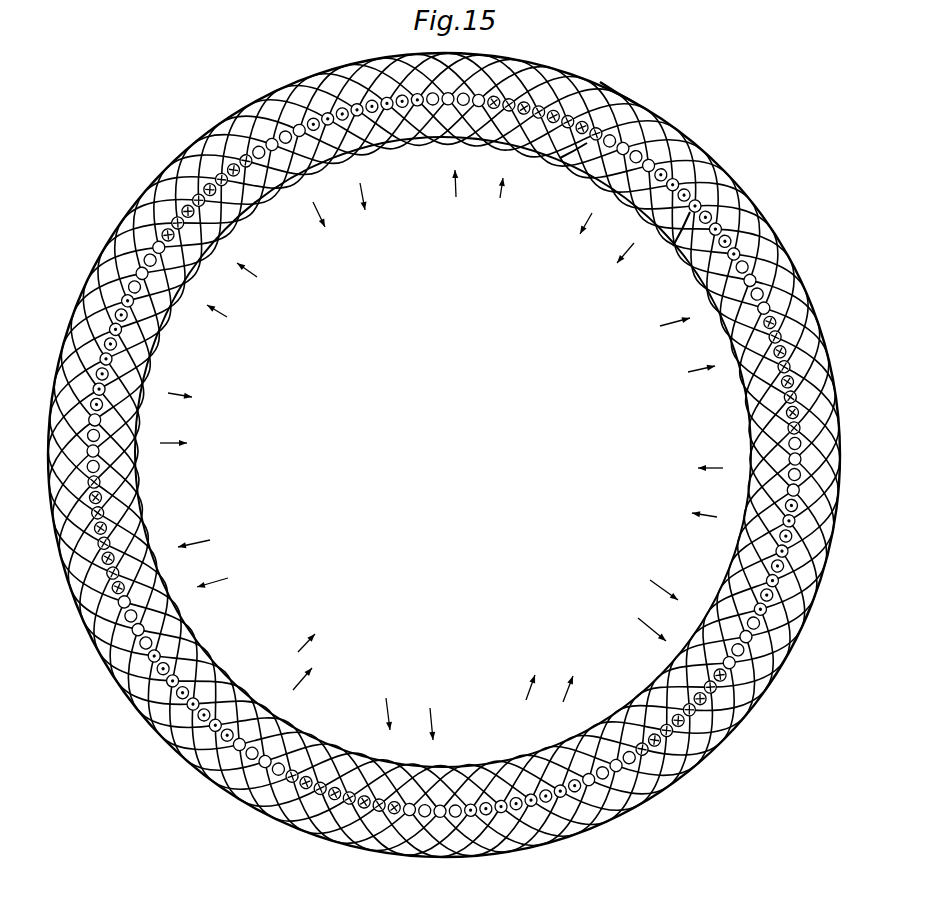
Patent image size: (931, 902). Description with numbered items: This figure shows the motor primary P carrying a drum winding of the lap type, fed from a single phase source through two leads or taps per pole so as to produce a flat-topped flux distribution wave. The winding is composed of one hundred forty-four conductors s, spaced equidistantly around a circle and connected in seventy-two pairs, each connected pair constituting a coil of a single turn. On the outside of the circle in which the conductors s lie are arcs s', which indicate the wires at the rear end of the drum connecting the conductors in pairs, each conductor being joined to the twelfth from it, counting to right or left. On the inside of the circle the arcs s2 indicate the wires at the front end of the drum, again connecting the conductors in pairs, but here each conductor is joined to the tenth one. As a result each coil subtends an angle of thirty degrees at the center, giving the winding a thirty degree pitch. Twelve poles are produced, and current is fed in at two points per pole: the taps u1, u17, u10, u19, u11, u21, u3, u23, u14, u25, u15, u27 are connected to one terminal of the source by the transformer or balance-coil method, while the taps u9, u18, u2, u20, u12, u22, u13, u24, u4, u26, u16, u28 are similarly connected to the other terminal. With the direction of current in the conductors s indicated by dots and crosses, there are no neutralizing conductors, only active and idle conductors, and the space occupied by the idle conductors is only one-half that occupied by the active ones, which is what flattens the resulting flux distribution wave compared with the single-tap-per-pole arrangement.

The tap u1 is at (448, 106).
The tap u2 is at (788, 462).
The tap u3 is at (441, 804).
The tap u4 is at (102, 451).
The tap u9 is at (615, 158).
The tap u10 is at (742, 288).
The tap u11 is at (740, 632).
The tap u12 is at (612, 758).
The tap u13 is at (290, 769).
The tap u14 is at (153, 638).
The tap u15 is at (150, 275).
The tap u16 is at (277, 152).
The tap u17 is at (507, 112).
The tap u18 is at (666, 192).
The tap u19 is at (768, 342).
The tap u20 is at (781, 520).
The tap u21 is at (703, 681).
The tap u22 is at (556, 784).
The tap u23 is at (378, 798).
The tap u24 is at (243, 737).
The tap u25 is at (125, 583).
The tap u26 is at (108, 390).
The tap u27 is at (186, 228).
The tap u28 is at (360, 117).
The motor primary P is at (444, 455).
The conductors s is at (568, 170).
The arcs s' is at (635, 97).
The arcs s2 is at (673, 246).